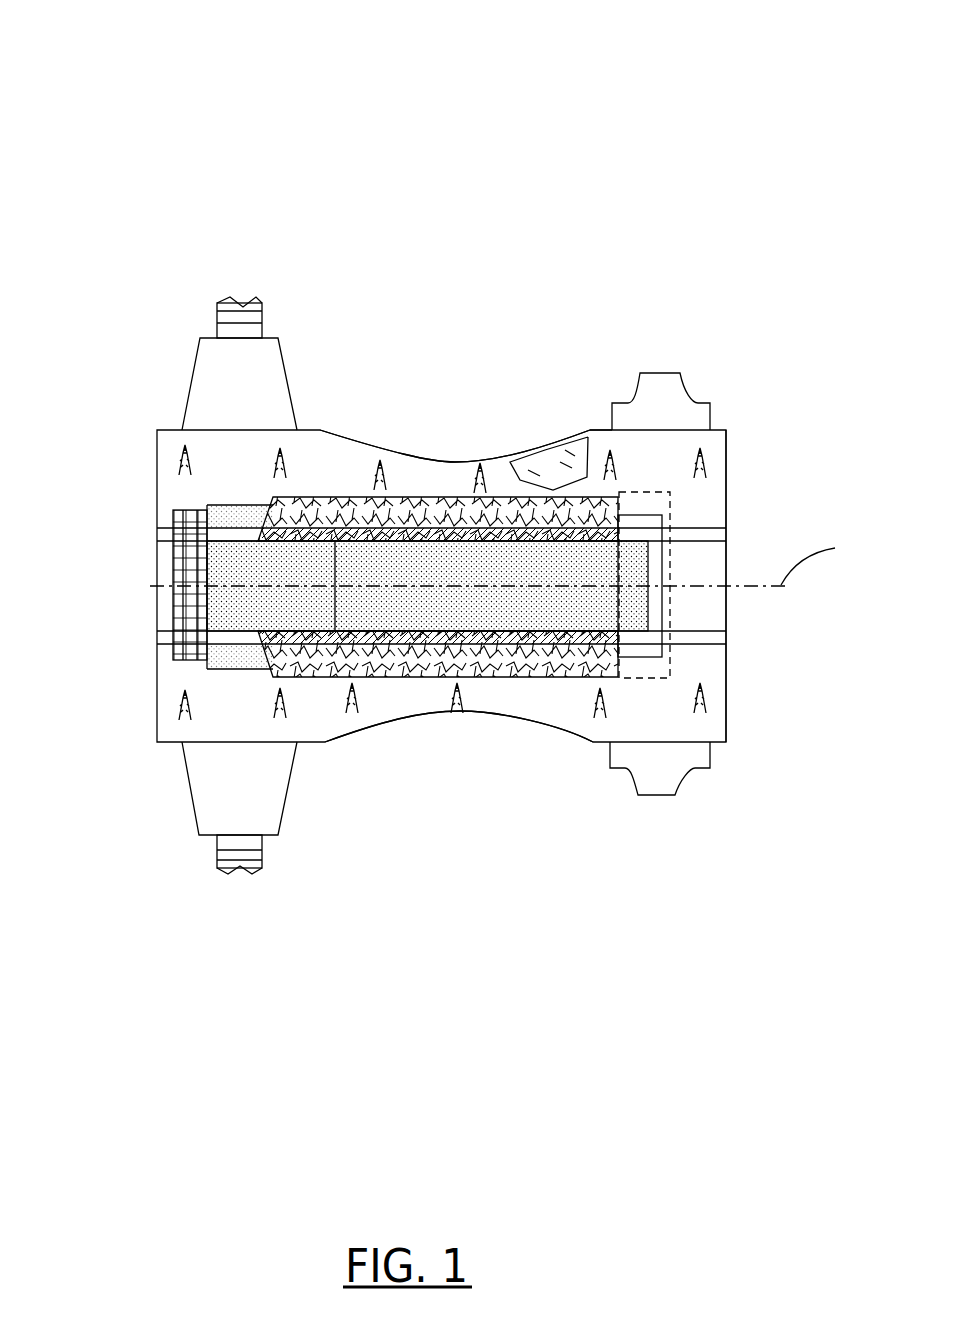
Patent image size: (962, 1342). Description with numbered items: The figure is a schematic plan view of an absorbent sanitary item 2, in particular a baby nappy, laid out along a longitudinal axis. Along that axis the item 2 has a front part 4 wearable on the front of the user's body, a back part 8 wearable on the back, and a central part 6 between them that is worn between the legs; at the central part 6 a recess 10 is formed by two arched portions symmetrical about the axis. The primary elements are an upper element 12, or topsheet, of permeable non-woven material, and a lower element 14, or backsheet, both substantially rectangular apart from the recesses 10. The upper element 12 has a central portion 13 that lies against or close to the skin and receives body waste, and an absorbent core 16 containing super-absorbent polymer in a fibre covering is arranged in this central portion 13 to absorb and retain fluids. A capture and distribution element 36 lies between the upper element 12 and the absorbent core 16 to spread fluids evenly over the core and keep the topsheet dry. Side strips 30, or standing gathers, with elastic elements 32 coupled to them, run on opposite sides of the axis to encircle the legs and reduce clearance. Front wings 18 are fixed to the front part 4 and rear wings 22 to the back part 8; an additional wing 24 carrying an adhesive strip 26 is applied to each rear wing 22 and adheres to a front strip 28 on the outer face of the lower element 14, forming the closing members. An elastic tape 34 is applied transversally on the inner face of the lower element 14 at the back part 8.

The absorbent sanitary item 2 is at (240, 100).
The front part 4 is at (708, 556).
The central part 6 is at (468, 402).
The back part 8 is at (208, 472).
The recess 10 is at (339, 431).
The upper element 12 is at (728, 700).
The central portion 13 is at (226, 601).
The lower element 14 is at (555, 457).
The absorbent core 16 is at (238, 637).
The front wings 18 is at (716, 405).
The rear wings 22 is at (190, 360).
The additional wing 24 is at (258, 298).
The adhesive strip 26 is at (236, 302).
The front strip 28 is at (673, 503).
The side strips 30 is at (229, 673).
The elastic elements 32 is at (421, 500).
The elastic tape 34 is at (188, 563).
The capture and distribution element 36 is at (650, 619).